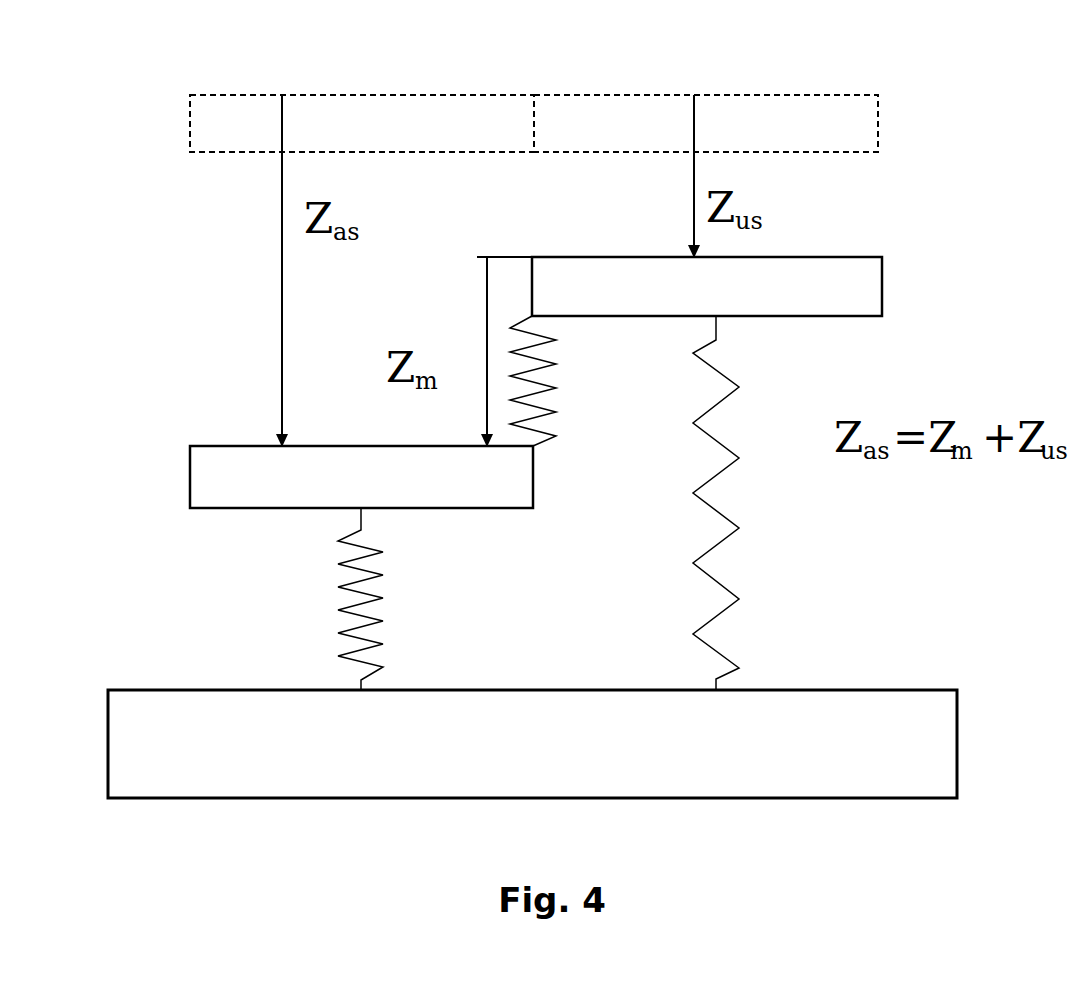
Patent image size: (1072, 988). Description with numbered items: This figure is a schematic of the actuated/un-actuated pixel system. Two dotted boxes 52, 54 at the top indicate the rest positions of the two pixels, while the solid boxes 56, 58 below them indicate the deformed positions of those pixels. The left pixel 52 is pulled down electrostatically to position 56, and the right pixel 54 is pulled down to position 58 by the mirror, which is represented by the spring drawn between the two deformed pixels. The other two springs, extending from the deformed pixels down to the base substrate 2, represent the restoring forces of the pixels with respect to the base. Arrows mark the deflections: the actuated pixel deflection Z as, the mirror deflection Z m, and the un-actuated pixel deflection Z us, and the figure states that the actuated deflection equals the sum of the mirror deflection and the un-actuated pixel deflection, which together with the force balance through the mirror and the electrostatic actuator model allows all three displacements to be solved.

The base substrate 2 is at (957, 748).
The actuated pixel rest position 52 is at (225, 95).
The un-actuated pixel rest position 54 is at (787, 95).
The deformed position of actuated pixel 56 is at (207, 446).
The deformed position of un-actuated pixel 58 is at (882, 288).